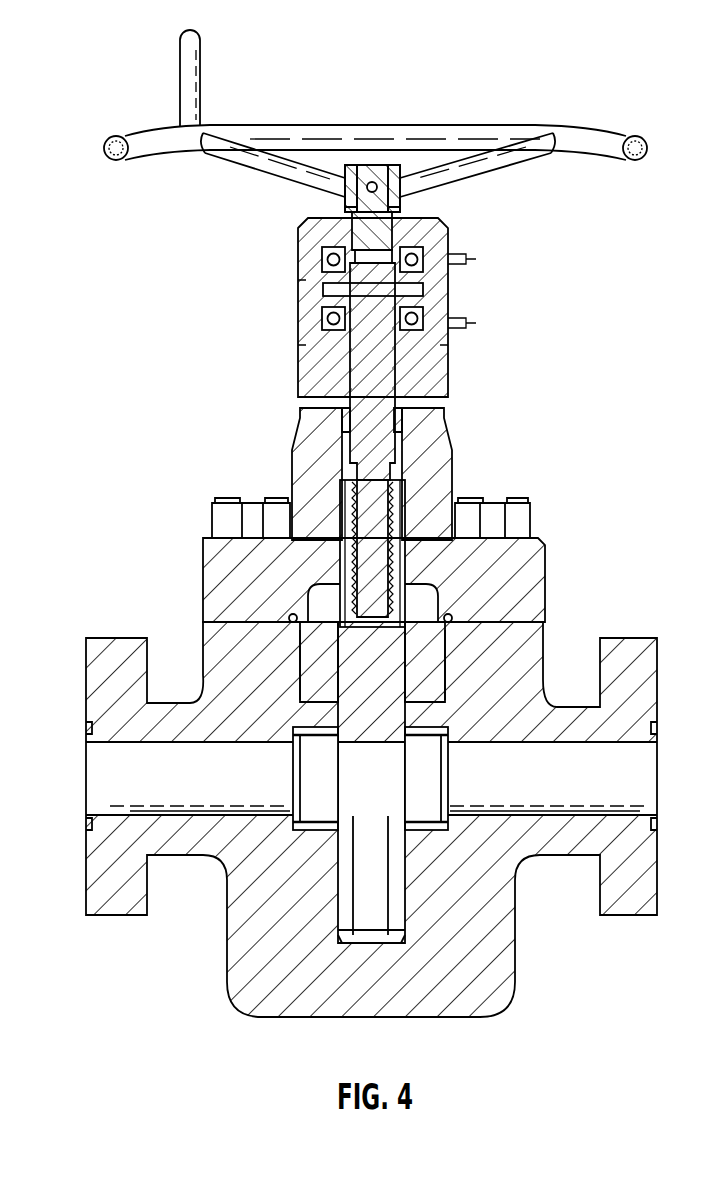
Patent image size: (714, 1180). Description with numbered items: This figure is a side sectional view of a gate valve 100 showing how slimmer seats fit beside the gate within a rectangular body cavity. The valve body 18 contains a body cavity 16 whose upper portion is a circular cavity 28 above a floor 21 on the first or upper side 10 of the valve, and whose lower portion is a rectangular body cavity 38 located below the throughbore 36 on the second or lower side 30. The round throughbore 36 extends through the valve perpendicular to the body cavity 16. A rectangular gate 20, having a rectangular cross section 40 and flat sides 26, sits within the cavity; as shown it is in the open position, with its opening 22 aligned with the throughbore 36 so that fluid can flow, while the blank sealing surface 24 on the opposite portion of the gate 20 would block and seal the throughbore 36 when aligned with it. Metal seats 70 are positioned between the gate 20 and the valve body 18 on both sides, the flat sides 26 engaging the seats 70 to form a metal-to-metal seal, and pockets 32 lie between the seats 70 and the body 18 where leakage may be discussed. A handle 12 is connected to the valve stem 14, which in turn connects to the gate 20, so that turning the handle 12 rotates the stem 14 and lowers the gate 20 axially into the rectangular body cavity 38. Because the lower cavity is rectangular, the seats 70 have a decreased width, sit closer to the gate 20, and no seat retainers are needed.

The gate valve 100 is at (574, 35).
The first or upper side 10 is at (90, 560).
The handle 12 is at (465, 135).
The valve stem 14 is at (375, 370).
The body cavity 16 is at (318, 653).
The valve body 18 is at (222, 640).
The gate 20 is at (350, 636).
The floor 21 is at (433, 647).
The opening 22 is at (338, 783).
The blank sealing surface 24 is at (400, 647).
The flat sides 26 is at (332, 695).
The circular cavity 28 is at (503, 618).
The second or lower side 30 is at (130, 966).
The pockets 32 is at (455, 737).
The throughbore 36 is at (100, 772).
The rectangular body cavity 38 is at (338, 913).
The rectangular cross section 40 is at (387, 837).
The seats 70 is at (425, 822).